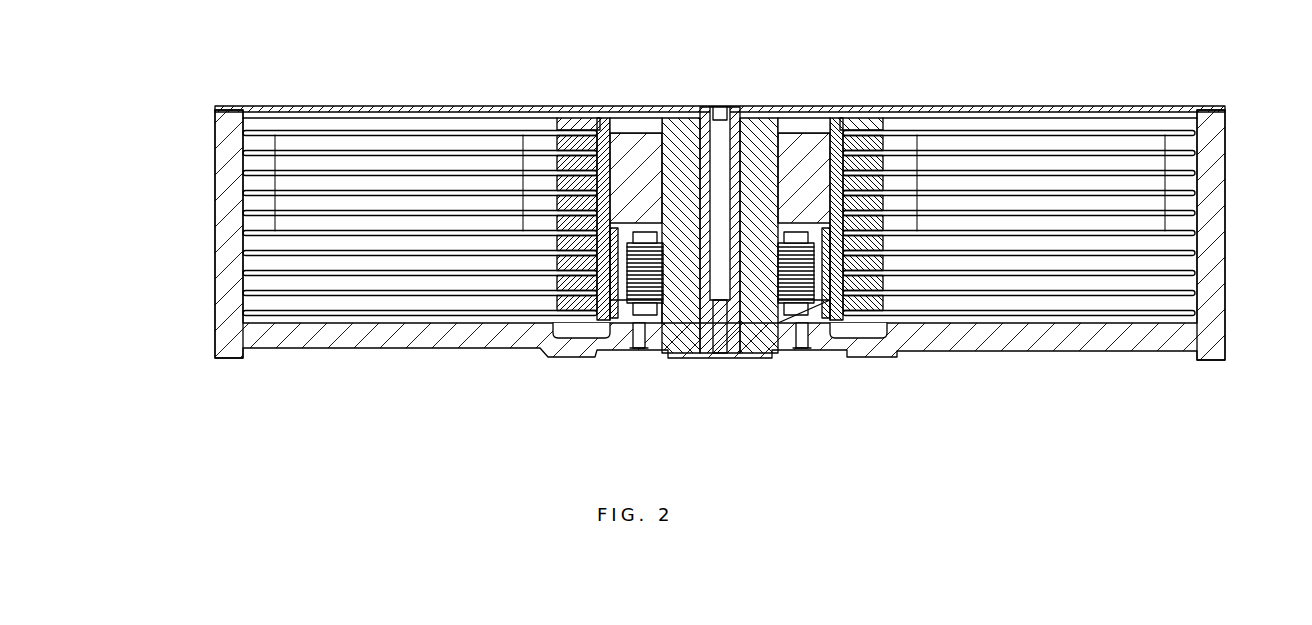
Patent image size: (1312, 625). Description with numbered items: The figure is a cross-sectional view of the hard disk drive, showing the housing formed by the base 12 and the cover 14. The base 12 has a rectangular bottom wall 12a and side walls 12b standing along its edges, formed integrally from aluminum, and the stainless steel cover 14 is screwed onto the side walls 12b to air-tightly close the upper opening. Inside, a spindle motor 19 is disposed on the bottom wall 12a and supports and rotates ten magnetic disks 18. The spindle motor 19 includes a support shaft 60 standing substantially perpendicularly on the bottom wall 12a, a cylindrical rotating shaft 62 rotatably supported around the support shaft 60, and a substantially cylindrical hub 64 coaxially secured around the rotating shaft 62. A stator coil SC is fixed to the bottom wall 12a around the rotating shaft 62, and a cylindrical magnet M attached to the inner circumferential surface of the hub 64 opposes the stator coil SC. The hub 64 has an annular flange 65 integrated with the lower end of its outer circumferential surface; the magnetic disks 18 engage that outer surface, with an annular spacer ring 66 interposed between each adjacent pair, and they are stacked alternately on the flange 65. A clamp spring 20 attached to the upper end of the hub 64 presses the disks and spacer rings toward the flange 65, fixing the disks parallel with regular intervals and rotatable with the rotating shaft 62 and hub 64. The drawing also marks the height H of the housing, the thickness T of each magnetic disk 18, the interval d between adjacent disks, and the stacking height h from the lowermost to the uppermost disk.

The base 12 is at (325, 352).
The bottom wall 12a is at (453, 335).
The side walls 12b is at (228, 272).
The cover 14 is at (421, 107).
The magnetic disks 18 is at (1105, 213).
The spindle motor 19 is at (666, 338).
The clamp spring 20 is at (597, 117).
The support shaft 60 is at (742, 353).
The rotating shaft 62 is at (765, 145).
The hub 64 is at (818, 118).
The flange 65 is at (580, 318).
The spacer ring 66 is at (885, 223).
The stator coil SC is at (617, 330).
The magnet M is at (820, 335).
The height of the housing H is at (215, 358).
The thickness of the magnetic disks T is at (243, 177).
The stacking height h is at (1197, 132).
The interval d is at (1238, 296).